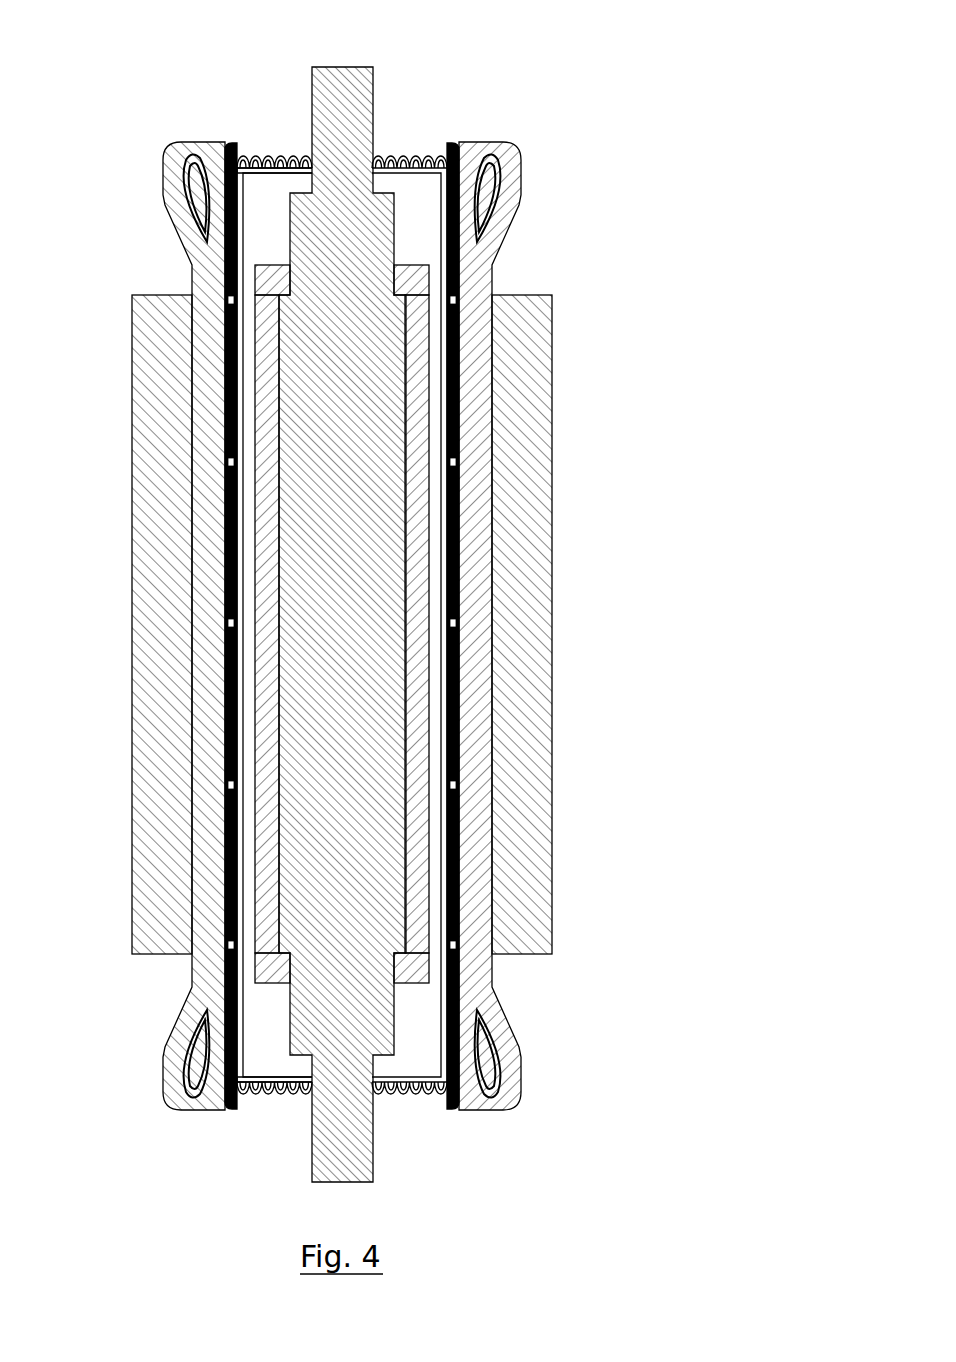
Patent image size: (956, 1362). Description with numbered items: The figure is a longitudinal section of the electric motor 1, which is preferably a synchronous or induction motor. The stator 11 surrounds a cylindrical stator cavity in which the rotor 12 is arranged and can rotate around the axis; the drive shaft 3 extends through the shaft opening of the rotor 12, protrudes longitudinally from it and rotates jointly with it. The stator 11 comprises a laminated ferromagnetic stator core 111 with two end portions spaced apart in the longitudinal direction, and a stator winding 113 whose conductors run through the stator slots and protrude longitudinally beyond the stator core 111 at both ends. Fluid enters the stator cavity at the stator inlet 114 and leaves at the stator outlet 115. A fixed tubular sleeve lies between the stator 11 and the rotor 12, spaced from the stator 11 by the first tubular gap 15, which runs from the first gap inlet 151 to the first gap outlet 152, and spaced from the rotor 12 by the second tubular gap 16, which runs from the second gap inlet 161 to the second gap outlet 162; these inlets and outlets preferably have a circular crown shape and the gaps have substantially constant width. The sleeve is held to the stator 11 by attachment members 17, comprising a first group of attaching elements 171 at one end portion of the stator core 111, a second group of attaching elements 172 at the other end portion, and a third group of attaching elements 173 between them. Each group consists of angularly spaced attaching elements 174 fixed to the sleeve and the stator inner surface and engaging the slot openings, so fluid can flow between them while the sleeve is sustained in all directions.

The electric motor 1 is at (600, 462).
The drive shaft 3 is at (332, 1163).
The stator 11 is at (553, 890).
The stator core 111 is at (520, 706).
The stator winding 113 is at (513, 163).
The stator inlet 114 is at (393, 1127).
The stator outlet 115 is at (406, 120).
The rotor 12 is at (268, 850).
The first tubular gap 15 is at (225, 393).
The first gap inlet 151 is at (455, 1088).
The first gap outlet 152 is at (455, 148).
The second tubular gap 16 is at (250, 543).
The second gap inlet 161 is at (250, 992).
The second gap outlet 162 is at (248, 256).
The attachment members 17 is at (455, 785).
The first group of attaching elements 171 is at (232, 945).
The second group of attaching elements 172 is at (232, 300).
The third group of attaching elements 173 is at (455, 627).
The attaching element 174 is at (455, 623).